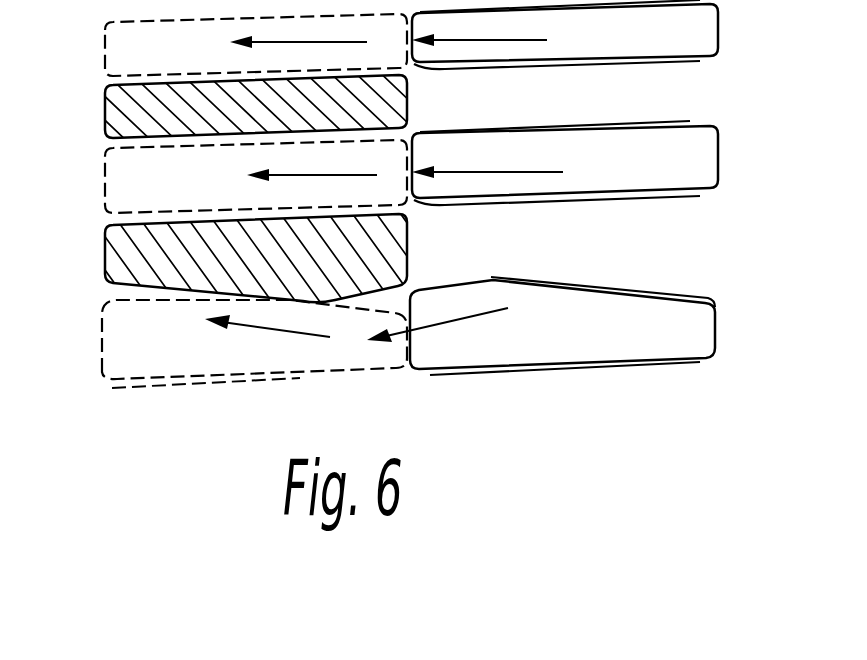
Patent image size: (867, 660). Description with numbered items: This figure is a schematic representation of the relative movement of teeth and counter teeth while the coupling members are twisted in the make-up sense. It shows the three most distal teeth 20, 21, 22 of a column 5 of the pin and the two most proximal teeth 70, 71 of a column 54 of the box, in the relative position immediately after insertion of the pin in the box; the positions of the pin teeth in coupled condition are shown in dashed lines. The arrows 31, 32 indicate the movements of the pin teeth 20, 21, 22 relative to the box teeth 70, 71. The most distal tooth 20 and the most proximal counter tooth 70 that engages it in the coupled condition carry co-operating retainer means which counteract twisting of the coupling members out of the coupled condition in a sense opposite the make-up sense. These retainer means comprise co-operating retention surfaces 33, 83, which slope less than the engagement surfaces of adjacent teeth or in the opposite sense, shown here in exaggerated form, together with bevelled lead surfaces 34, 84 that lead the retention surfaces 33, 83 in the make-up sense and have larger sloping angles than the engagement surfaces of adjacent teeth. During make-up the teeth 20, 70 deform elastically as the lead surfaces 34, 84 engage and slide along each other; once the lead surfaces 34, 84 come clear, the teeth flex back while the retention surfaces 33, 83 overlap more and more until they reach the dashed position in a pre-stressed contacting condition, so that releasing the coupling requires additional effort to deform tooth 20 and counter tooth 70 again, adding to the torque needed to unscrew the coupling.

The column 5 is at (577, 400).
The most distal tooth 20 is at (574, 324).
The tooth 21 is at (718, 160).
The tooth 22 is at (718, 33).
The arrow 31 is at (463, 322).
The arrow 32 is at (284, 331).
The retention surface 33 is at (582, 282).
The lead surface 34 is at (390, 296).
The column 54 is at (215, 412).
The most proximal counter tooth 70 is at (105, 248).
The tooth 71 is at (105, 108).
The retention surface 83 is at (135, 283).
The lead surface 84 is at (469, 282).